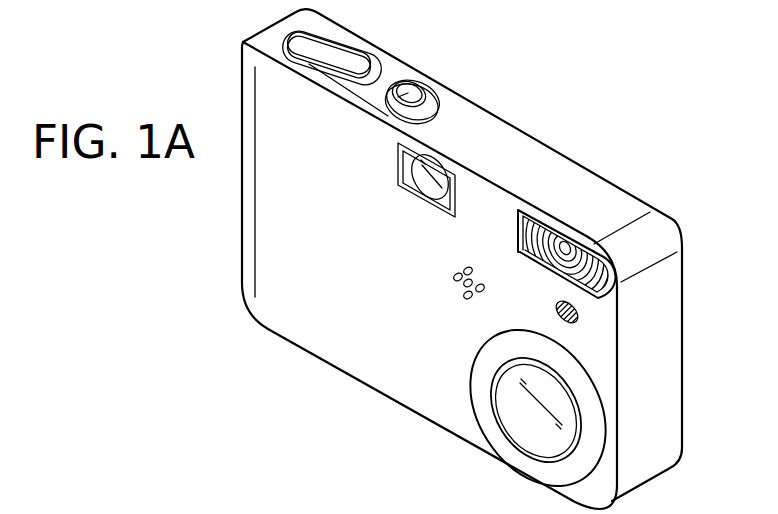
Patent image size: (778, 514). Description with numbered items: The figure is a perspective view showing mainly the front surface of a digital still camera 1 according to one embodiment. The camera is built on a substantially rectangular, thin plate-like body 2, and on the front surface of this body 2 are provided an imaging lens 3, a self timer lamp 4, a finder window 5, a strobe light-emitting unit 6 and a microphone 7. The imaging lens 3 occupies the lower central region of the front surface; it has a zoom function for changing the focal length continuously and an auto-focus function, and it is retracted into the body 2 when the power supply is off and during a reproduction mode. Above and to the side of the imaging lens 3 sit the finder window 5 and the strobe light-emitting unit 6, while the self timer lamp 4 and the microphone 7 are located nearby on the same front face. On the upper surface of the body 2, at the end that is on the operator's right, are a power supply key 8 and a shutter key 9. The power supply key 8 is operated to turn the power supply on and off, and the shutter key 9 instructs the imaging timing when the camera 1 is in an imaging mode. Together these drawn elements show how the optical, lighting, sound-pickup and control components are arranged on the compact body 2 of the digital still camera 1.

The digital still camera 1 is at (620, 100).
The body 2 is at (683, 283).
The imaging lens 3 is at (522, 408).
The self timer lamp 4 is at (577, 320).
The finder window 5 is at (436, 160).
The strobe light-emitting unit 6 is at (565, 247).
The microphone 7 is at (457, 292).
The power supply key 8 is at (389, 113).
The shutter key 9 is at (330, 52).